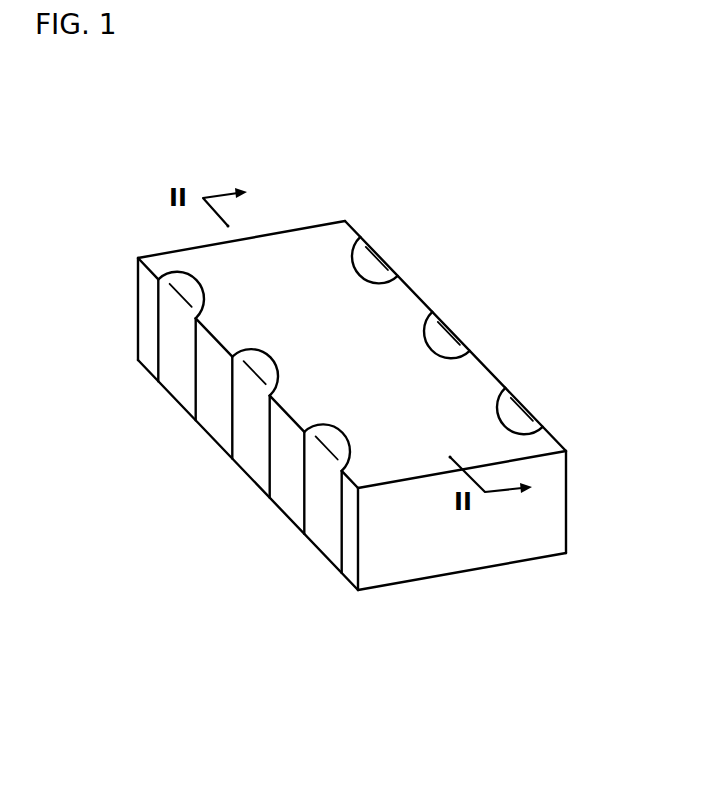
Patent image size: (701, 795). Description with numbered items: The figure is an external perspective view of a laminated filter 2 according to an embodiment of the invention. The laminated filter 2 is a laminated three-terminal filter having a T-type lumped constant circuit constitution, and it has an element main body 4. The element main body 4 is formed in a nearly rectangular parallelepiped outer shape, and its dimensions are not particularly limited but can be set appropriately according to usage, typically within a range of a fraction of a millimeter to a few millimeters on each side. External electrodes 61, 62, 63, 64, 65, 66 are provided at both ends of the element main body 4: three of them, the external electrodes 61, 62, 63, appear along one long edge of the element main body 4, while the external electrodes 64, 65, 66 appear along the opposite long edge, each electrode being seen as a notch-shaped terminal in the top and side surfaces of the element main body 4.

The laminated filter 2 is at (534, 565).
The element main body 4 is at (392, 326).
The external electrode 61 is at (325, 543).
The external electrode 62 is at (253, 463).
The external electrode 63 is at (178, 385).
The external electrode 64 is at (528, 405).
The external electrode 65 is at (452, 328).
The external electrode 66 is at (378, 252).